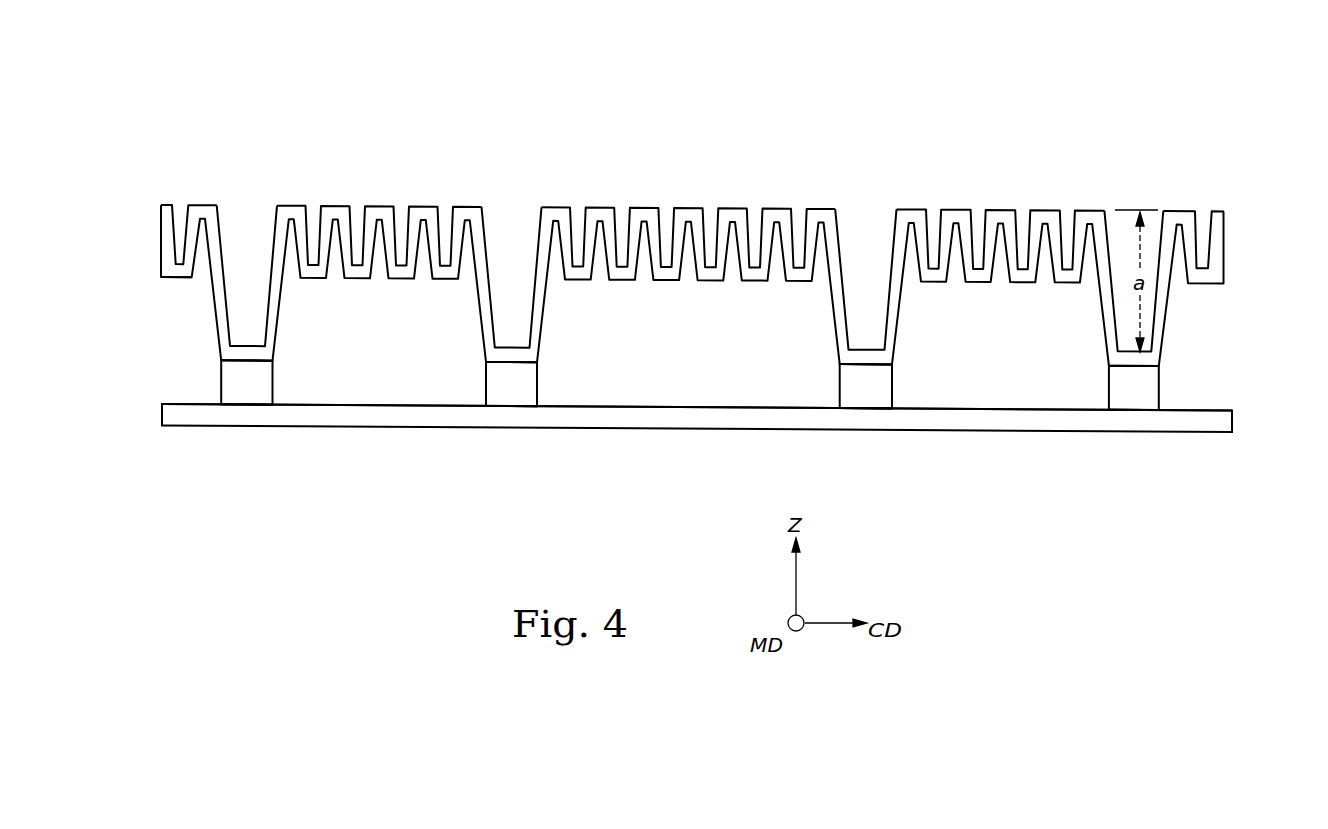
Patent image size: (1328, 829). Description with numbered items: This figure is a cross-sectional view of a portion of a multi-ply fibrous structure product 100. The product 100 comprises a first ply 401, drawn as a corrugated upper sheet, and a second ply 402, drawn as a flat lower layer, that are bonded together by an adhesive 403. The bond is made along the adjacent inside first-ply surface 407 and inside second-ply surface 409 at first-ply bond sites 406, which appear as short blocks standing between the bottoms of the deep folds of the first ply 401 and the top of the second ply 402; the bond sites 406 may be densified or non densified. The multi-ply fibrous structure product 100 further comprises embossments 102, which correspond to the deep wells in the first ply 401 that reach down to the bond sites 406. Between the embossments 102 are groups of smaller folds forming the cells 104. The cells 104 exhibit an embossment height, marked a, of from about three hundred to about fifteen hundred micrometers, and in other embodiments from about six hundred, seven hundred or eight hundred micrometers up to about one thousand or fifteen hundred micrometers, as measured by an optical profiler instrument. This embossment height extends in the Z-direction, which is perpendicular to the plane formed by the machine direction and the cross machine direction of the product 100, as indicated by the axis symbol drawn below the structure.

The multi-ply fibrous structure product 100 is at (667, 267).
The embossments 102 is at (247, 178).
The cells 104 is at (677, 180).
The first ply 401 is at (638, 233).
The second ply 402 is at (667, 394).
The adhesive 403 is at (245, 395).
The first-ply bond sites 406 is at (252, 362).
The inside first-ply surface 407 is at (177, 280).
The inside second-ply surface 409 is at (1205, 410).